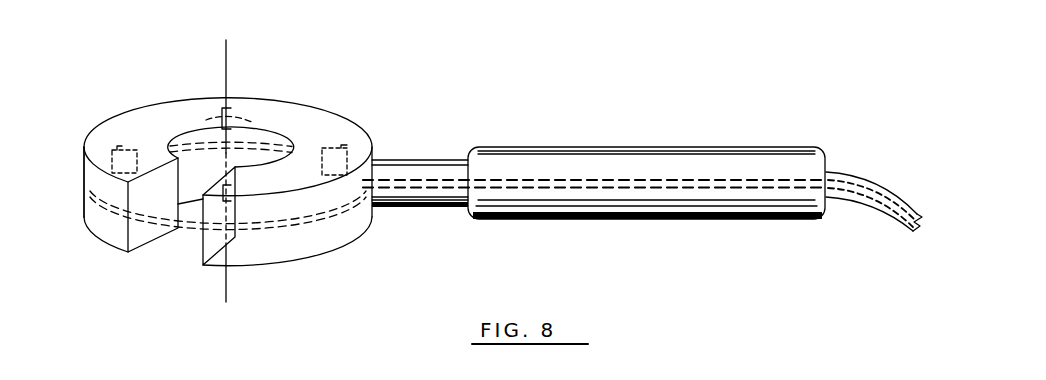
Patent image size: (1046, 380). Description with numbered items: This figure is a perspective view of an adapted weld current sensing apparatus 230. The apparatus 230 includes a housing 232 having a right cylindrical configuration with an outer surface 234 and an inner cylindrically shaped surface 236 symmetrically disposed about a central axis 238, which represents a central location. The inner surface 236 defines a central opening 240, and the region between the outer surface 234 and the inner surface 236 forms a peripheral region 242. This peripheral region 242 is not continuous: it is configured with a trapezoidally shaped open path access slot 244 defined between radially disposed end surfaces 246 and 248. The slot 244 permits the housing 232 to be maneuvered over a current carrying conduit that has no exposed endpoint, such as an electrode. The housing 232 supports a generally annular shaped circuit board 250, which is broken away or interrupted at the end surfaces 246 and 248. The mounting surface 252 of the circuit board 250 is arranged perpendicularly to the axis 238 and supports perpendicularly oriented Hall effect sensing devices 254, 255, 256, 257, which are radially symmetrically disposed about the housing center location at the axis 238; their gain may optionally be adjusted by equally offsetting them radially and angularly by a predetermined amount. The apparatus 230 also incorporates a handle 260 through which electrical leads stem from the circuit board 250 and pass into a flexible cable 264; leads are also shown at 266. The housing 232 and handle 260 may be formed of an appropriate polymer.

The weld current sensing apparatus 230 is at (476, 36).
The housing 232 is at (83, 213).
The outer surface 234 is at (84, 152).
The inner surface 236 is at (207, 138).
The central axis 238 is at (229, 48).
The central opening 240 is at (310, 107).
The peripheral region 242 is at (161, 100).
The open path access slot 244 is at (185, 246).
The end surface 246 is at (147, 230).
The end surface 248 is at (201, 262).
The circuit board 250 is at (334, 213).
The mounting surface 252 is at (268, 193).
The Hall effect sensing device 254 is at (349, 149).
The Hall effect sensing device 255 is at (257, 138).
The Hall effect sensing device 256 is at (117, 147).
The Hall effect sensing device 257 is at (227, 193).
The handle 260 is at (651, 218).
The flexible cable 264 is at (840, 172).
The shaft conductor 266 is at (515, 186).